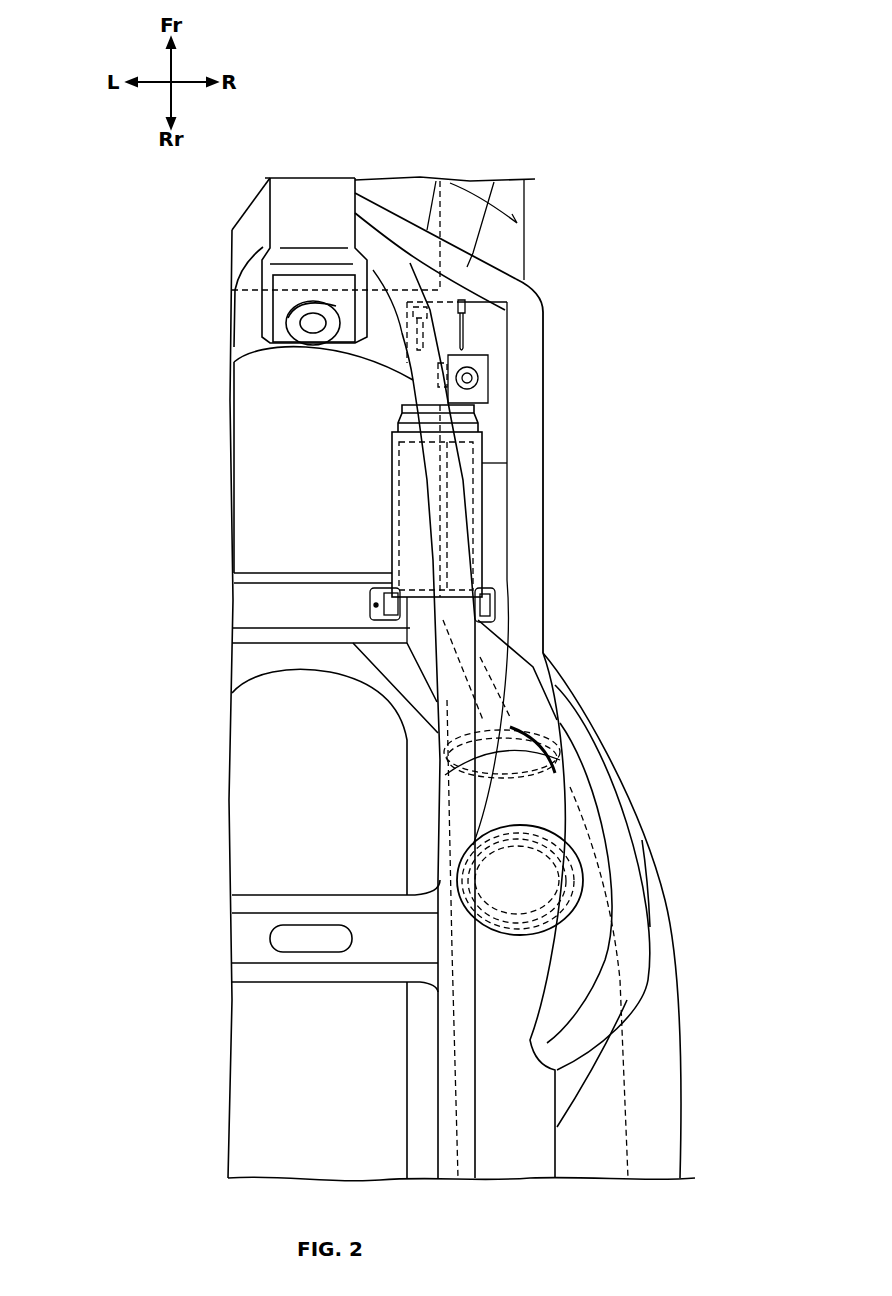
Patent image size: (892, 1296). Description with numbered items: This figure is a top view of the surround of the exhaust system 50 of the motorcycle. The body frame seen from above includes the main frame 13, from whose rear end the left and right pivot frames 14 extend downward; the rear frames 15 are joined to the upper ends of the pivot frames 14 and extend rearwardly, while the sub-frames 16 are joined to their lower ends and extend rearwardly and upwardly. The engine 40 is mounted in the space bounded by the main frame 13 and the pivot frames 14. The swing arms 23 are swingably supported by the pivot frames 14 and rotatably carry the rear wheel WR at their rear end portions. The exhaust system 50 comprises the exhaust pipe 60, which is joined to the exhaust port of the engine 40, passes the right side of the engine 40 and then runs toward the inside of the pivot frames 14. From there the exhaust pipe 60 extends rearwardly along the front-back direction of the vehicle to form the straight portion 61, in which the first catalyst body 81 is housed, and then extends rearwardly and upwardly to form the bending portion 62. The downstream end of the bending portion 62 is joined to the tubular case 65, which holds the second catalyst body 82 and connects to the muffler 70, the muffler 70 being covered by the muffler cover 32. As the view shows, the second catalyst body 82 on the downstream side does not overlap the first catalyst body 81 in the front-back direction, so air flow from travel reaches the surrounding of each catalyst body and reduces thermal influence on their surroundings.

The main frame 13 is at (315, 188).
The engine 40 is at (402, 198).
The exhaust pipe 60 is at (460, 208).
The pivot frames 14 is at (467, 267).
The exhaust system 50 is at (545, 293).
The sub-frames 16 is at (533, 407).
The straight portion 61 is at (481, 503).
The first catalyst body 81 is at (473, 543).
The swing arms 23 is at (270, 607).
The bending portion 62 is at (477, 648).
The case 65 is at (543, 800).
The second catalyst body 82 is at (527, 882).
The rear wheel WR is at (290, 857).
The muffler cover 32 is at (662, 1002).
The rear frames 15 is at (460, 1053).
The muffler 70 is at (528, 1097).